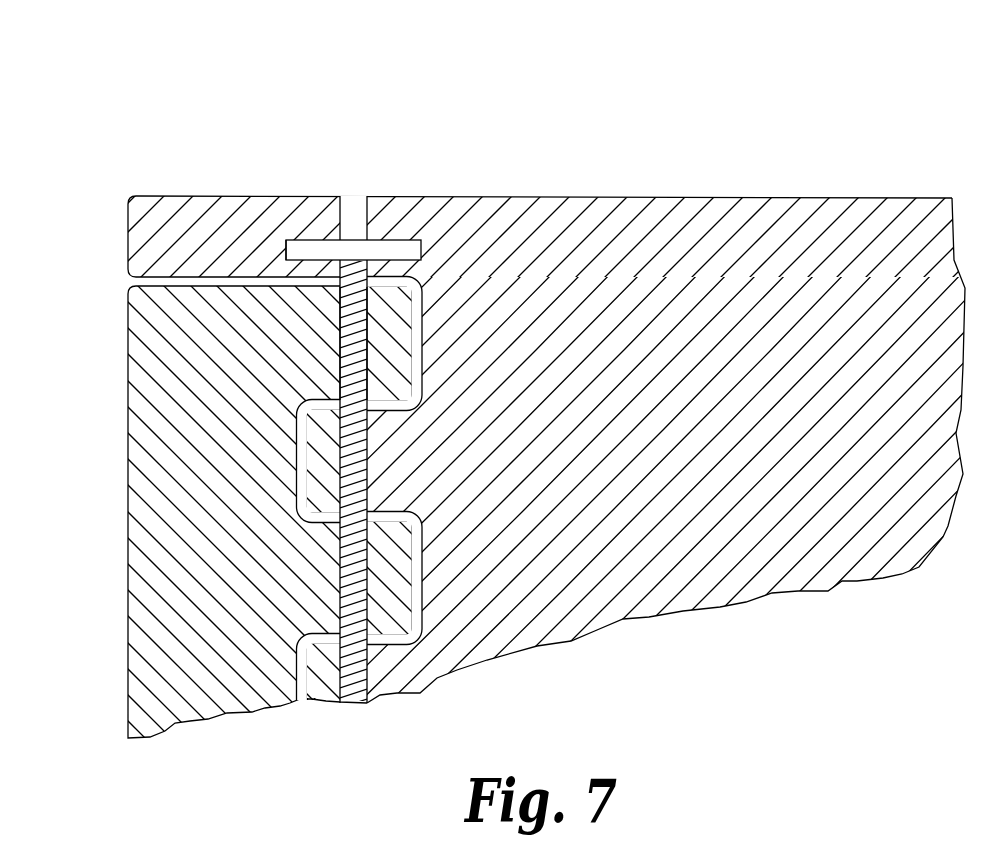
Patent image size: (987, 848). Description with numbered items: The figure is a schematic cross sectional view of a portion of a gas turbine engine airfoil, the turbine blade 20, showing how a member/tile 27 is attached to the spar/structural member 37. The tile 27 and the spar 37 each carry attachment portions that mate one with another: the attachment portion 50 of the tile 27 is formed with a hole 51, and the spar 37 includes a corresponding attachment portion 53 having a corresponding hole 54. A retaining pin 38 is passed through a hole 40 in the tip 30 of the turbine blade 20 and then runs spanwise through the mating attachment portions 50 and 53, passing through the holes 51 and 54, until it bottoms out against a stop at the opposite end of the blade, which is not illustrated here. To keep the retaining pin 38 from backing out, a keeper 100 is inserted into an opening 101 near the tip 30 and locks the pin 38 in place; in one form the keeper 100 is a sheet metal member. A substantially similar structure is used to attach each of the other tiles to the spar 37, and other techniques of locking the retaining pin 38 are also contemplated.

The turbine blade 20 is at (493, 400).
The member/tile 27 is at (170, 347).
The tip 30 is at (325, 197).
The spar/structural member 37 is at (603, 256).
The retaining pin 38 is at (357, 330).
The hole 40 is at (352, 222).
The attachment portion 50 is at (322, 355).
The hole 51 is at (363, 335).
The attachment portion 53 is at (323, 442).
The hole 54 is at (333, 487).
The keeper 100 is at (319, 250).
The opening 101 is at (287, 240).